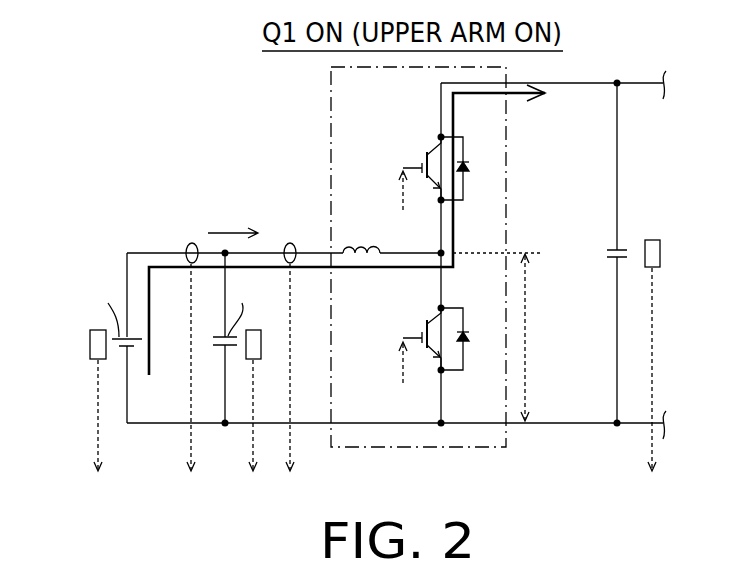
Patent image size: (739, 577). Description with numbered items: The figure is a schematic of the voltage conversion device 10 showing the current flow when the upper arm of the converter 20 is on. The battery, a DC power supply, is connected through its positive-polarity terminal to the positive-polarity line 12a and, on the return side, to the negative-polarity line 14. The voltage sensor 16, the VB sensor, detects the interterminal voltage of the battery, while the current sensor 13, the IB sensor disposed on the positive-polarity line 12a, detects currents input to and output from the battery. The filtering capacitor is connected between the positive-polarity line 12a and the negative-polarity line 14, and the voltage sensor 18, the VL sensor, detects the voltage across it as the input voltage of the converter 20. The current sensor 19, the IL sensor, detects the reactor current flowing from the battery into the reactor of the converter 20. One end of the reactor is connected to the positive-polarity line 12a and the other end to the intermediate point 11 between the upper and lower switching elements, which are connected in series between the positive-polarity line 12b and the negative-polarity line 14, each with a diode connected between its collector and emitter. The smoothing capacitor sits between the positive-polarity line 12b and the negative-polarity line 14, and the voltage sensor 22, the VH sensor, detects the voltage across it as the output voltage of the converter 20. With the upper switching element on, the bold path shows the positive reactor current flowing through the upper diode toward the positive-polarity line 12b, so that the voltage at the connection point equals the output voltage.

The voltage conversion device 10 is at (150, 111).
The connection node 11 is at (440, 250).
The positive-polarity line 12a is at (263, 252).
The positive-polarity line 12b is at (592, 82).
The current sensor 13 is at (192, 243).
The negative-polarity line 14 is at (397, 425).
The voltage sensor 16 is at (90, 341).
The voltage sensor 18 is at (261, 342).
The current sensor 19 is at (290, 243).
The converter 20 is at (331, 108).
The voltage sensor 22 is at (661, 253).